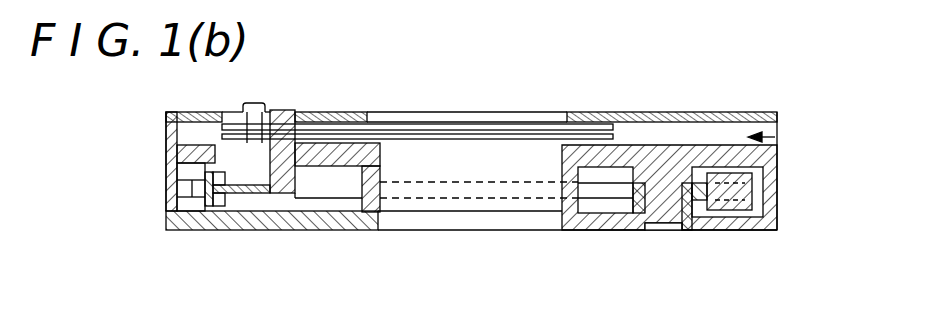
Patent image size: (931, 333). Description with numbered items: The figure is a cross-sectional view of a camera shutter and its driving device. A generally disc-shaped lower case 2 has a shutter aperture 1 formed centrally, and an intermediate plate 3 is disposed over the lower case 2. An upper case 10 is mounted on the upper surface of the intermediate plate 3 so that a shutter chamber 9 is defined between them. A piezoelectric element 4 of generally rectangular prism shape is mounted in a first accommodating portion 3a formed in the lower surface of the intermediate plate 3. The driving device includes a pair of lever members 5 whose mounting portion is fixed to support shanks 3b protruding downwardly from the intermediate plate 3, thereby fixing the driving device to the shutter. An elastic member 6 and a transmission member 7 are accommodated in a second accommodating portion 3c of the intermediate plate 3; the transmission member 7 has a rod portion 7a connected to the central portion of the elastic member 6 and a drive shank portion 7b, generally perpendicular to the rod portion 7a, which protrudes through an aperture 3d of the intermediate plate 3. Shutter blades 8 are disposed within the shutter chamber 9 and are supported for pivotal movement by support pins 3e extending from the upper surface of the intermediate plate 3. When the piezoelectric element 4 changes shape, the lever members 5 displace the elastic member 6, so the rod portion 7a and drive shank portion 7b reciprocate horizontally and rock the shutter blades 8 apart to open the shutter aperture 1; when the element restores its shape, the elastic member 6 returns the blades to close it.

The shutter aperture 1 is at (555, 233).
The lower case 2 is at (750, 232).
The intermediate plate 3 is at (778, 167).
The first accommodating portion 3a is at (713, 222).
The support shanks 3b is at (658, 223).
The second accommodating portion 3c is at (362, 198).
The aperture 3d is at (300, 158).
The support pins 3e is at (255, 100).
The piezoelectric element 4 is at (755, 205).
The lever members 5 is at (307, 200).
The elastic member 6 is at (195, 210).
The transmission member 7 is at (240, 193).
The rod portion 7a is at (252, 193).
The drive shank portion 7b is at (283, 109).
The shutter blades 8 is at (473, 136).
The shutter chamber 9 is at (776, 137).
The upper case 10 is at (740, 118).